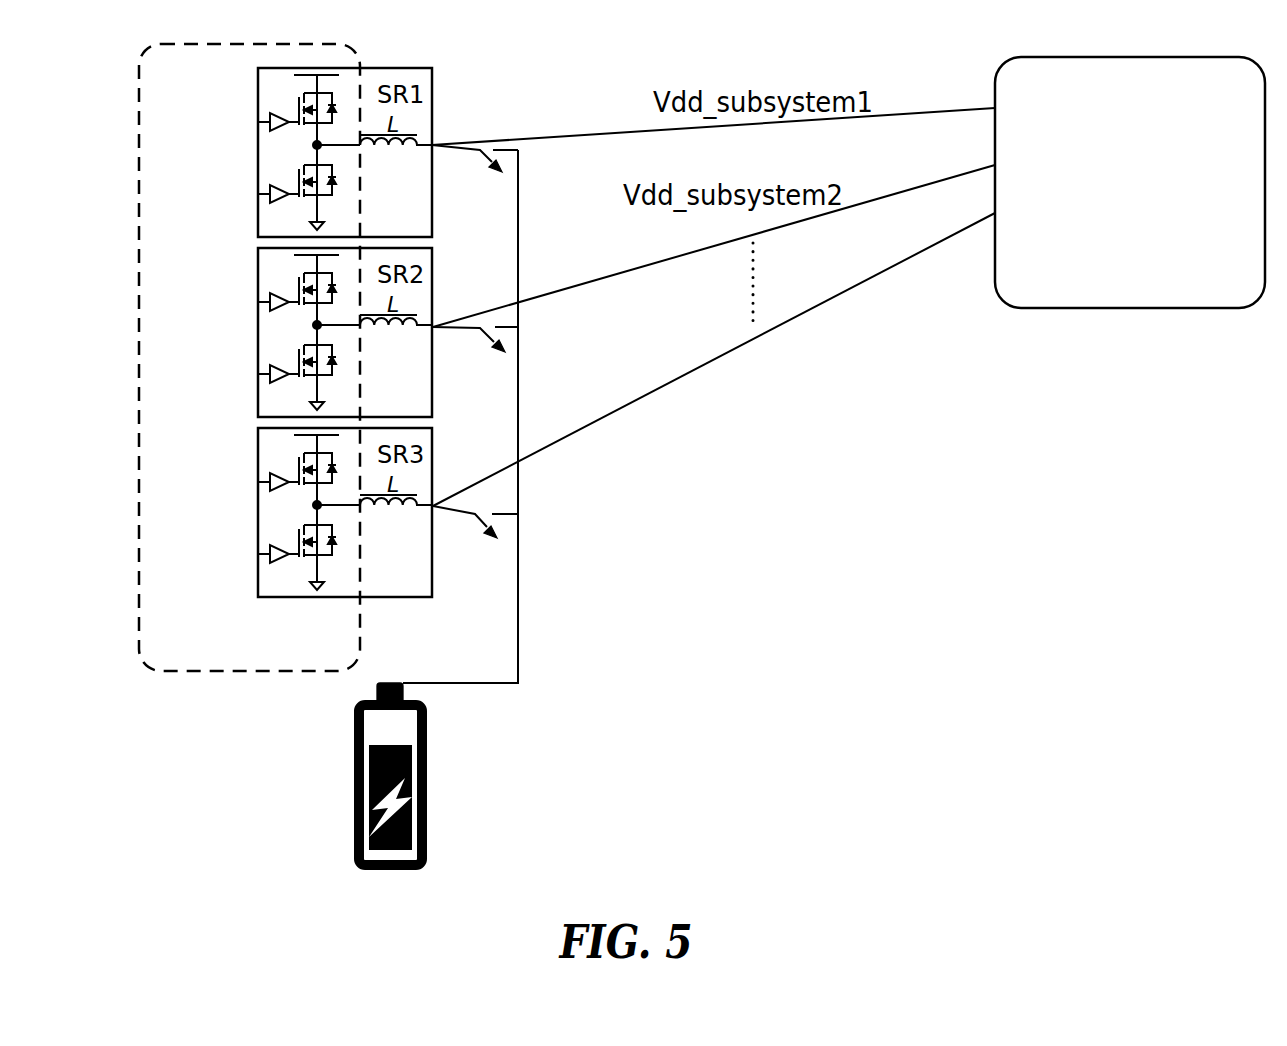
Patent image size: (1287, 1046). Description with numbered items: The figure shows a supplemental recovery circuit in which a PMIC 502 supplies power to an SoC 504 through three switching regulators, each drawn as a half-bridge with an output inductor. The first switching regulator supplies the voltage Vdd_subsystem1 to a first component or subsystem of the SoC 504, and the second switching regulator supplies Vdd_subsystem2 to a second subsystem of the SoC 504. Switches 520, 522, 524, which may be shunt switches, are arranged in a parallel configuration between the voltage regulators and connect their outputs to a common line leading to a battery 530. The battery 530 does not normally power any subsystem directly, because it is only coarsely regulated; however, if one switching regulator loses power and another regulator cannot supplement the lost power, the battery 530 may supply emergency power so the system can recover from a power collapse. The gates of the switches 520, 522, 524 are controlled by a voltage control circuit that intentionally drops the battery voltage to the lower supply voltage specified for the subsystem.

The PMIC 502 is at (249, 357).
The SoC 504 is at (1130, 182).
The switch 520 is at (482, 152).
The switch 522 is at (482, 330).
The switch 524 is at (477, 516).
The battery 530 is at (367, 848).